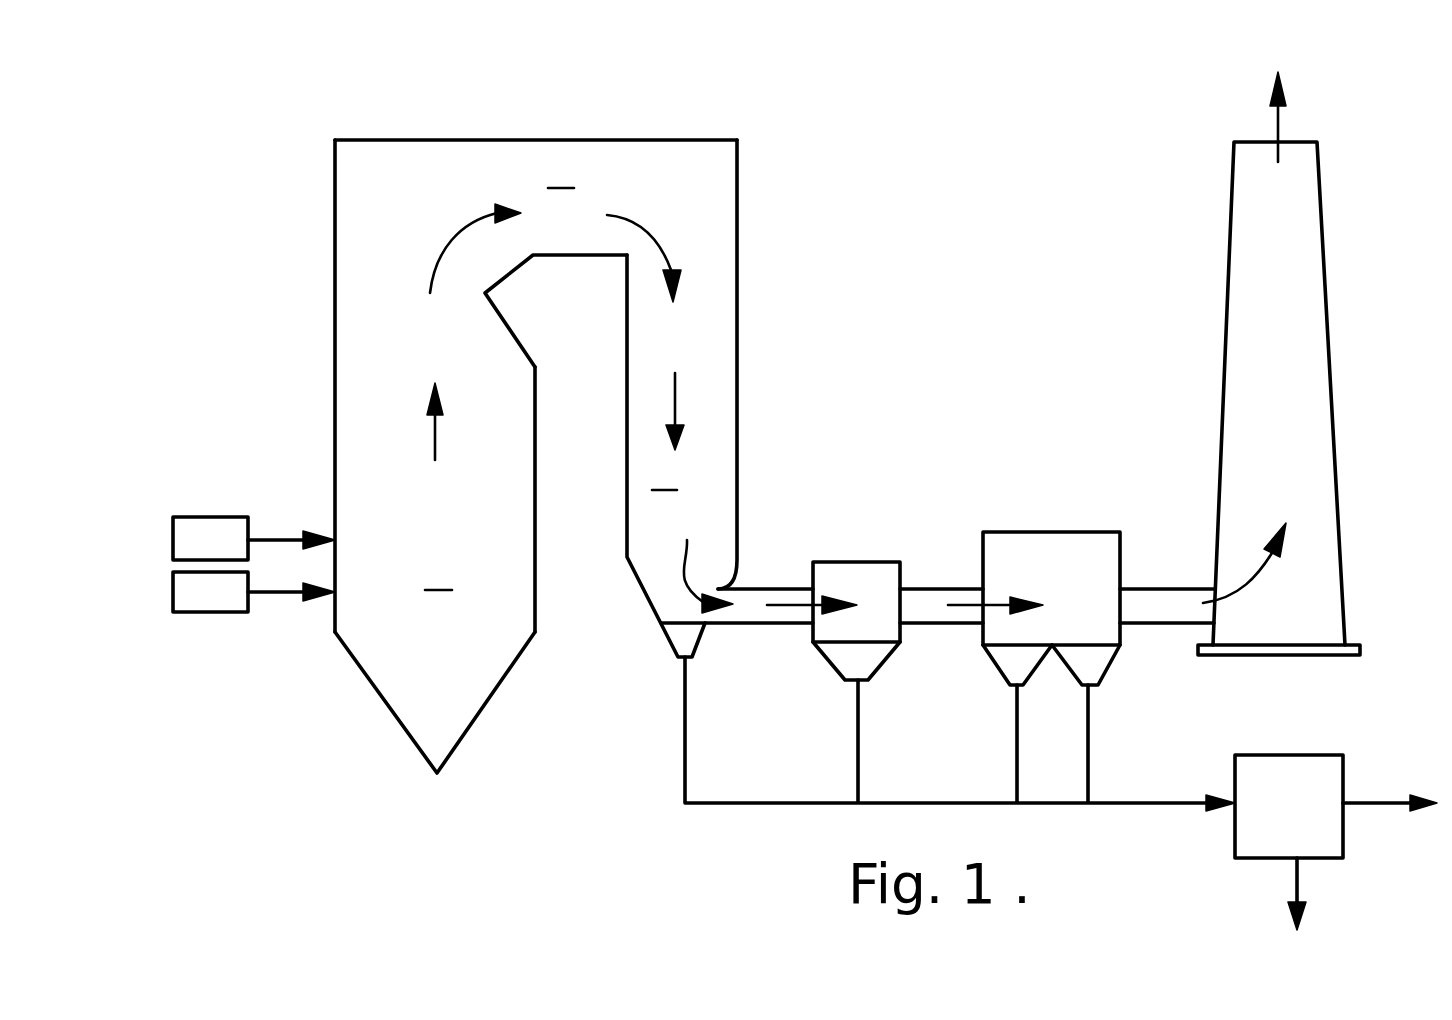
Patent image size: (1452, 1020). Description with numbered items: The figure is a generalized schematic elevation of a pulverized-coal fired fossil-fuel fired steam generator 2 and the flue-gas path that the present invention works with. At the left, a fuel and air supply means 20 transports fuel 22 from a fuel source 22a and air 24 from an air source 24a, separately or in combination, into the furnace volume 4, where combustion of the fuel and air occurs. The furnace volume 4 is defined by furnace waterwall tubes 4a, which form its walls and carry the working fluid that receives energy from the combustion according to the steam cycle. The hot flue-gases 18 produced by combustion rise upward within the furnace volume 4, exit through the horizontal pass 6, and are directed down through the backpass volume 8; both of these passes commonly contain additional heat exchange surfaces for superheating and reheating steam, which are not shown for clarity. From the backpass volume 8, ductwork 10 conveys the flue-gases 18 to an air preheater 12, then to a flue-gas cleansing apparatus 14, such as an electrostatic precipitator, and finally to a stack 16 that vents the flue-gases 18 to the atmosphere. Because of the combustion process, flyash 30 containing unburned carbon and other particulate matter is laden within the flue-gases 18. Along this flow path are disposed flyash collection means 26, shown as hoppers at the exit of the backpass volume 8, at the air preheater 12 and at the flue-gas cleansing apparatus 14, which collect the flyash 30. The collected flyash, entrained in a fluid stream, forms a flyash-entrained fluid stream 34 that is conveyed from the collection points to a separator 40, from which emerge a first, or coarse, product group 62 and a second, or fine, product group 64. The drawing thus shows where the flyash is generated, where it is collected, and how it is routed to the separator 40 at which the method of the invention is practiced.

The fossil-fuel fired steam generator 2 is at (920, 200).
The furnace volume 4 is at (435, 664).
The furnace waterwall tubes 4a is at (337, 490).
The horizontal pass 6 is at (536, 253).
The backpass volume 8 is at (682, 398).
The ductwork 10 is at (748, 588).
The air preheater 12 is at (852, 562).
The flue-gas cleansing apparatus 14 is at (1062, 532).
The stack 16 is at (1324, 272).
The flue-gases 18 is at (1282, 123).
The fuel and air supply means 20 is at (254, 752).
The fuel 22 is at (275, 537).
The fuel source 22a is at (205, 517).
The air 24 is at (275, 592).
The air source 24a is at (213, 612).
The flyash collection means 26 is at (670, 650).
The flyash 30 is at (453, 237).
The flyash-entrained fluid stream 34 is at (692, 675).
The separator 40 is at (1289, 806).
The first, or coarse, product group 62 is at (1330, 894).
The second, or fine, product group 64 is at (1380, 802).